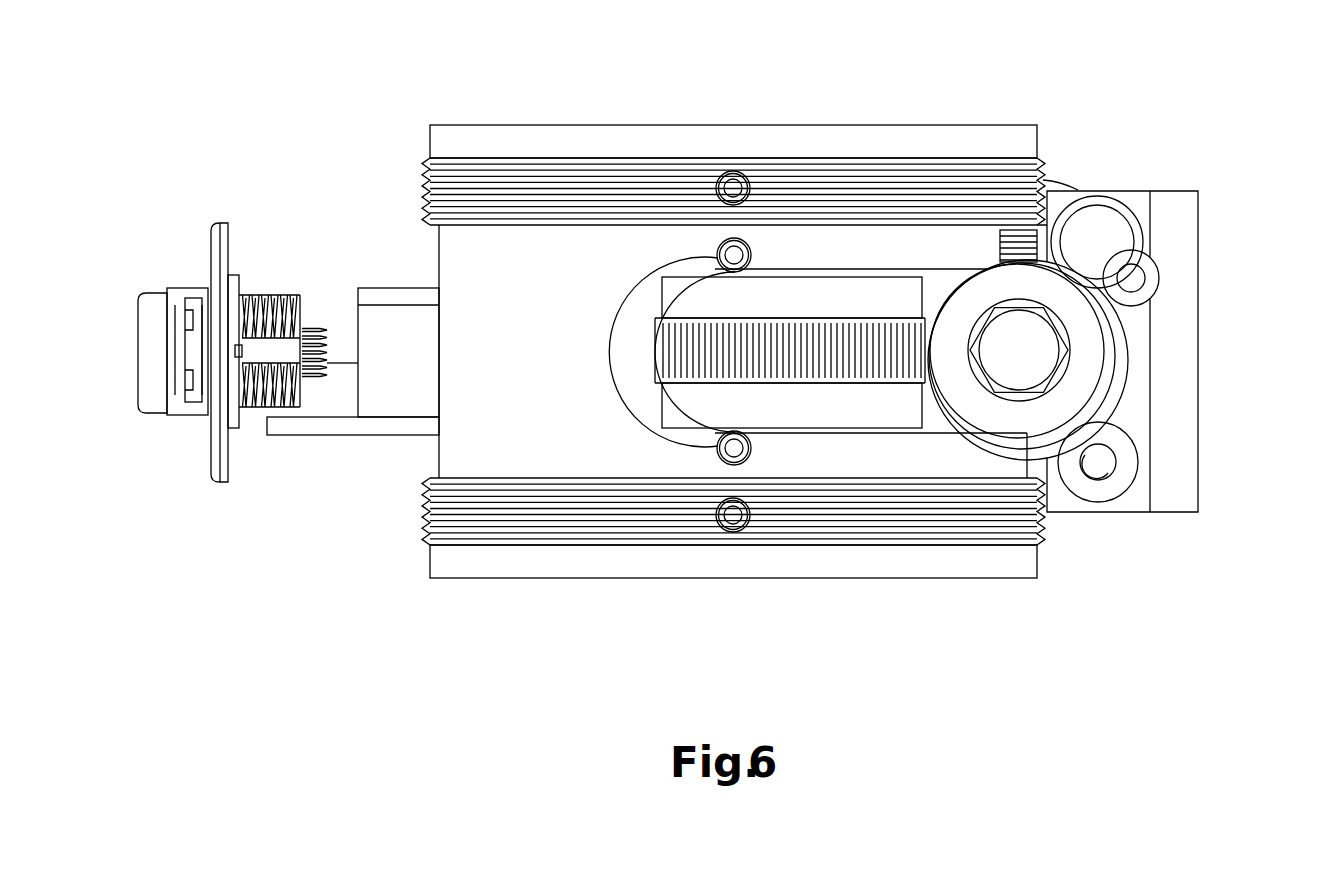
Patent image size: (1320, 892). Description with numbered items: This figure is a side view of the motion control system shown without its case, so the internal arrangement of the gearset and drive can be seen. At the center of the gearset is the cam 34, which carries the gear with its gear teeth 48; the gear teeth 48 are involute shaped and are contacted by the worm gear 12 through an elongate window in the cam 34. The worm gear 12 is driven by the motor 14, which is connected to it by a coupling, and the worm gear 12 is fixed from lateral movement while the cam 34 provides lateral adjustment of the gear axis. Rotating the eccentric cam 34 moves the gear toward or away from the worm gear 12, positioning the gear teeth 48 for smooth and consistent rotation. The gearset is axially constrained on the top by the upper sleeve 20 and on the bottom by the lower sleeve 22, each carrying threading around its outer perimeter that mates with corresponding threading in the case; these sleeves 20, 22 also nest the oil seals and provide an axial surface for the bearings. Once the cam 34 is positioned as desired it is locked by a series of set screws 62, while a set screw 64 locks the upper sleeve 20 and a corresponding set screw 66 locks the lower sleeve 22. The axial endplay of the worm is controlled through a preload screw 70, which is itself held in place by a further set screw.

The worm gear 12 is at (1123, 332).
The motor 14 is at (1182, 240).
The upper sleeve 20 is at (430, 140).
The lower sleeve 22 is at (430, 562).
The cam 34 is at (455, 255).
The gear teeth 48 is at (835, 377).
The set screws 62 is at (692, 442).
The set screw 64 is at (733, 188).
The set screw 66 is at (730, 515).
The preload screw 70 is at (1082, 373).